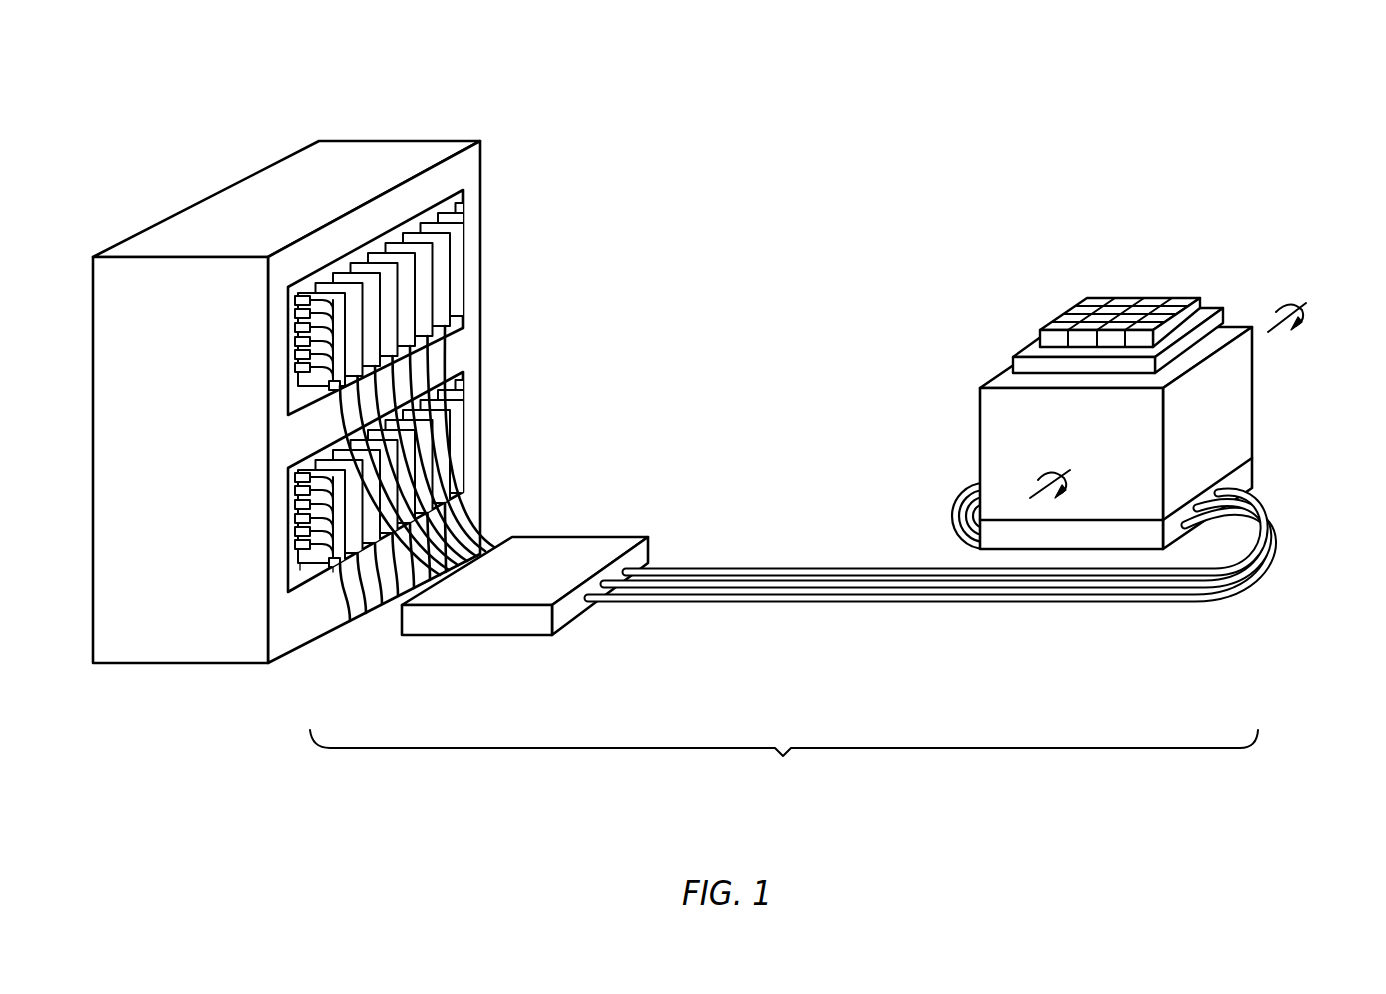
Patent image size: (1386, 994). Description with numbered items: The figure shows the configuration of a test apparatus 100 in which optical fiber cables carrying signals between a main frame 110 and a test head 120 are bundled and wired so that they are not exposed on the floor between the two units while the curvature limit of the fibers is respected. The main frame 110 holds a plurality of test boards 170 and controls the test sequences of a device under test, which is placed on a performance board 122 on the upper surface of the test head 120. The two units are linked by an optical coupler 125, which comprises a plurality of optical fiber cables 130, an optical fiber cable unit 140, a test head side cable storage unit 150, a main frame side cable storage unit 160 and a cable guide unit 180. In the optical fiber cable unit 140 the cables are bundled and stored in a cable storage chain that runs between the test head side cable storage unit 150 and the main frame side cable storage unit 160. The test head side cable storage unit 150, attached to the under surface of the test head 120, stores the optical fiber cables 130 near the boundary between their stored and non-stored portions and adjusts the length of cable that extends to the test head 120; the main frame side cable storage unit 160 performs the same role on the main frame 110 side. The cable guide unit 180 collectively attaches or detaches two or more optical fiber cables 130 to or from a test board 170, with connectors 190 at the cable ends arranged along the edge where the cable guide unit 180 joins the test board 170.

The test apparatus 100 is at (1101, 70).
The main frame 110 is at (400, 141).
The test head 120 is at (1252, 397).
The performance board 122 is at (1213, 308).
The optical coupler 125 is at (784, 760).
The optical fiber cables 130 is at (452, 525).
The optical fiber cable unit 140 is at (738, 567).
The test head side cable storage unit 150 is at (1252, 470).
The main frame side cable storage unit 160 is at (528, 638).
The test boards 170 is at (293, 595).
The cable guide unit 180 is at (331, 582).
The connectors 190 is at (307, 580).